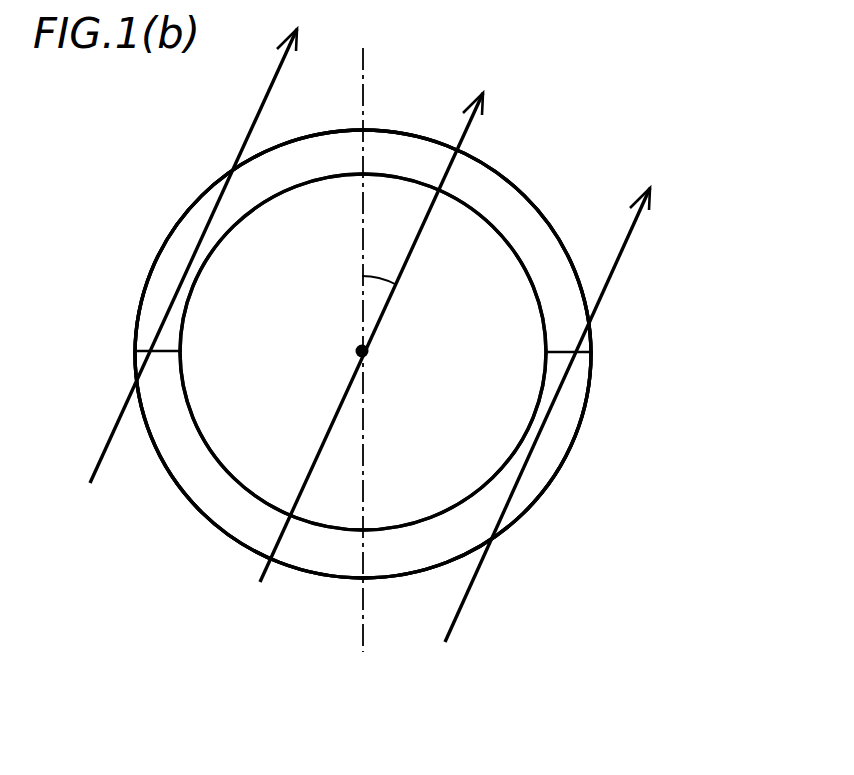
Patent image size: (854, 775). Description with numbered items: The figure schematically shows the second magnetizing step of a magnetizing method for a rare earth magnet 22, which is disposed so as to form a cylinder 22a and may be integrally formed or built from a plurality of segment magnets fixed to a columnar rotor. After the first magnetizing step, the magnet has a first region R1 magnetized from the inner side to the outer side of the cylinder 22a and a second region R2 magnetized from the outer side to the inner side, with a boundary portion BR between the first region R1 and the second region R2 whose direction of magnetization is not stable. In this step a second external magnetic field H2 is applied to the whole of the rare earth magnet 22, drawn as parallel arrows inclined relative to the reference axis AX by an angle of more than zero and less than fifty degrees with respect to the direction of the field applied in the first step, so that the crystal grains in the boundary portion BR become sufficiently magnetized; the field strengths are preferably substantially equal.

The rare earth magnet 22 is at (720, 223).
The cylinder 22a is at (555, 158).
The first region R1 is at (555, 265).
The second region R2 is at (548, 448).
The boundary portion BR is at (556, 348).
The axis AX is at (365, 95).
The second external magnetic field H2 is at (445, 625).